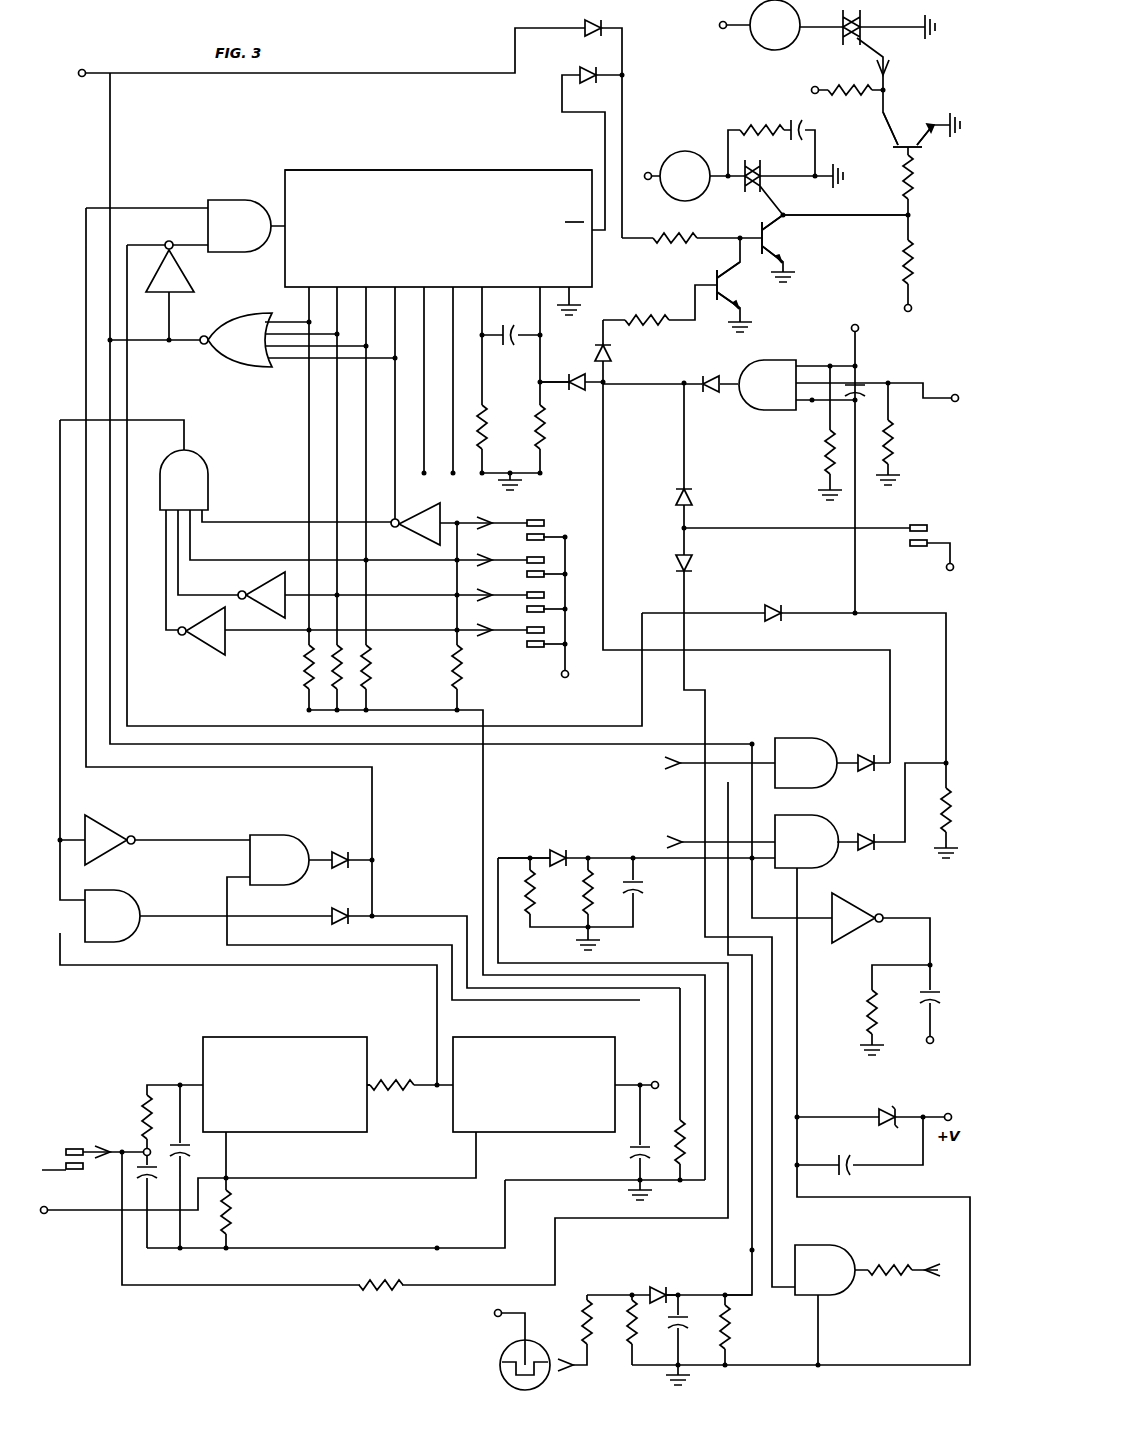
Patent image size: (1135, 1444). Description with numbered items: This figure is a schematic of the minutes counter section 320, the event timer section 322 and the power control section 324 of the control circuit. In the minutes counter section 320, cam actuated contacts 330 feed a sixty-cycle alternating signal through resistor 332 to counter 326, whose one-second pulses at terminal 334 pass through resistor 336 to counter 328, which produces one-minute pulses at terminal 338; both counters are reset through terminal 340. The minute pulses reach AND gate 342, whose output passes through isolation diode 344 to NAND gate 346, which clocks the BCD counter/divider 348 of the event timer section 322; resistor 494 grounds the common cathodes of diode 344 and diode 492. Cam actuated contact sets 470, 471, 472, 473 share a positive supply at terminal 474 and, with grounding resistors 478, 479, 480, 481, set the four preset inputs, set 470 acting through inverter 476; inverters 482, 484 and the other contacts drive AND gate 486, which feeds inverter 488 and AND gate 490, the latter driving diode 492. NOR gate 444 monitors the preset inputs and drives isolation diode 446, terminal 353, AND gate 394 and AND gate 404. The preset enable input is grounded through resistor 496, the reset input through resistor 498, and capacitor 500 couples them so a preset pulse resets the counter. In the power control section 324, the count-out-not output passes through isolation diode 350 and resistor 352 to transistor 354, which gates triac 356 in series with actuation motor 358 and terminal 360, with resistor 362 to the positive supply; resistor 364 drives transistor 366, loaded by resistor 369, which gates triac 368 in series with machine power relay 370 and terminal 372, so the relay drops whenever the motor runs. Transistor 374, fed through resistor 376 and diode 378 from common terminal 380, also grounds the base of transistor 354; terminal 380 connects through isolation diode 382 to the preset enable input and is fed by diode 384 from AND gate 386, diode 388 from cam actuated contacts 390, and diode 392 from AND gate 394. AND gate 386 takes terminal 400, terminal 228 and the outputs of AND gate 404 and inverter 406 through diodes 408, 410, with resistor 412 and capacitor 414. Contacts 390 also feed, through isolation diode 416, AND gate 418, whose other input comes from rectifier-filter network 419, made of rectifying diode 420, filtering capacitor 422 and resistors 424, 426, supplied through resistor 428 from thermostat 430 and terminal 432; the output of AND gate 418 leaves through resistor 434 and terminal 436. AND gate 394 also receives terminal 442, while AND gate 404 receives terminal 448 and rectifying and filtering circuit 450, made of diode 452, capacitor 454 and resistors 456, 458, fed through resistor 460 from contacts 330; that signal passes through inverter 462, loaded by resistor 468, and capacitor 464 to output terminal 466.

The terminal 353 is at (80, 76).
The isolation diode 446 is at (588, 36).
The isolation diode 350 is at (590, 82).
The event timer section 322 is at (424, 136).
The BCD counter/divider 348 is at (438, 238).
The NAND gate 346 is at (242, 200).
The inverter 406 is at (180, 270).
The NOR gate 444 is at (232, 358).
The capacitor 500 is at (523, 332).
The resistor 496 is at (500, 427).
The resistor 498 is at (546, 432).
The AND gate 486 is at (205, 486).
The inverter 476 is at (412, 512).
The cam actuated terminals 470 is at (537, 520).
The cam actuated terminals 471 is at (532, 560).
The cam actuated terminals 472 is at (532, 595).
The cam actuated terminals 473 is at (532, 630).
The terminal 474 is at (569, 672).
The inverter 482 is at (258, 580).
The inverter 484 is at (205, 645).
The resistor 480 is at (345, 655).
The resistor 481 is at (303, 668).
The resistor 479 is at (372, 670).
The resistor 478 is at (463, 672).
The terminal 372 is at (718, 30).
The machine power relay 370 is at (770, 50).
The triac 368 is at (862, 18).
The resistor 369 is at (850, 97).
The NPN transistor 366 is at (900, 140).
The resistor 364 is at (915, 182).
The resistor 362 is at (915, 256).
The actuation motor 358 is at (676, 155).
The output terminal 360 is at (645, 180).
The triac 356 is at (755, 198).
The NPN transistor 354 is at (778, 226).
The power control section 324 is at (845, 236).
The resistor 352 is at (676, 248).
The transistor 374 is at (720, 280).
The resistor 376 is at (645, 310).
The diode 378 is at (612, 350).
The isolation diode 382 is at (575, 374).
The common terminal 380 is at (590, 392).
The isolation diode 384 is at (703, 376).
The AND gate 386 is at (775, 408).
The capacitor 414 is at (858, 397).
The terminal 228 is at (958, 403).
The diode 388 is at (692, 495).
The cam actuated contacts 390 is at (916, 528).
The terminal 400 is at (851, 330).
The isolation diode 416 is at (692, 563).
The isolation diode 410 is at (770, 608).
The AND gate 394 is at (810, 738).
The isolation diode 392 is at (873, 758).
The terminal 442 is at (668, 763).
The AND gate 404 is at (812, 822).
The terminal 448 is at (668, 842).
The isolation diode 408 is at (870, 850).
The resistor 412 is at (940, 815).
The inverter 462 is at (862, 912).
The capacitor 464 is at (925, 990).
The resistor 468 is at (865, 1010).
The output terminal 466 is at (933, 1043).
The AND gate 342 is at (290, 834).
The isolation diode 344 is at (350, 850).
The inverter 488 is at (115, 850).
The AND gate 490 is at (135, 905).
The isolation diode 492 is at (345, 905).
The rectifying and filtering circuit 450 is at (571, 836).
The diode 452 is at (548, 852).
The resistor 456 is at (536, 888).
The resistor 458 is at (582, 904).
The capacitor 454 is at (642, 882).
The resistor 332 is at (142, 1098).
The cam actuated contacts 330 is at (68, 1148).
The terminal 340 is at (47, 1215).
The 0 to 60 counter 326 is at (297, 1093).
The resistor 336 is at (408, 1080).
The terminal 334 is at (375, 1095).
The minutes counter section 320 is at (416, 1045).
The 0 to 60 counter 328 is at (539, 1093).
The terminal 338 is at (668, 1072).
The resistor 494 is at (676, 1140).
The resistor 460 is at (392, 1290).
The AND gate 418 is at (820, 1245).
The resistor 434 is at (880, 1262).
The terminal 436 is at (942, 1268).
The rectifying diode 420 is at (655, 1287).
The rectifier-filter network 419 is at (714, 1287).
The filtering capacitor 422 is at (680, 1320).
The resistor 424 is at (732, 1328).
The resistor 428 is at (580, 1318).
The resistor 426 is at (626, 1325).
The thermostat 430 is at (548, 1378).
The terminal 432 is at (495, 1318).